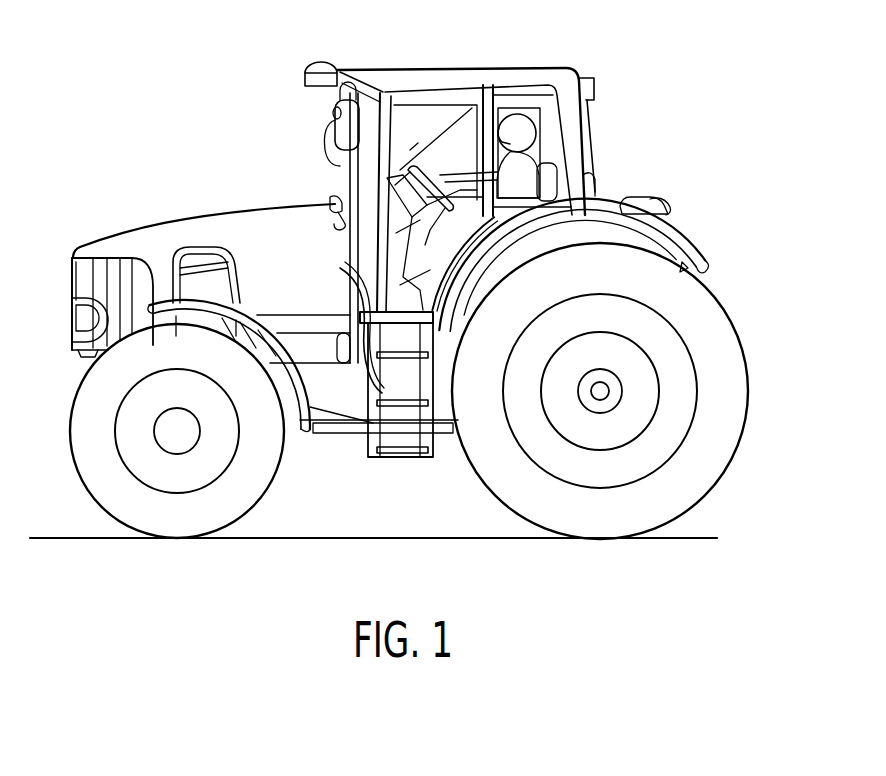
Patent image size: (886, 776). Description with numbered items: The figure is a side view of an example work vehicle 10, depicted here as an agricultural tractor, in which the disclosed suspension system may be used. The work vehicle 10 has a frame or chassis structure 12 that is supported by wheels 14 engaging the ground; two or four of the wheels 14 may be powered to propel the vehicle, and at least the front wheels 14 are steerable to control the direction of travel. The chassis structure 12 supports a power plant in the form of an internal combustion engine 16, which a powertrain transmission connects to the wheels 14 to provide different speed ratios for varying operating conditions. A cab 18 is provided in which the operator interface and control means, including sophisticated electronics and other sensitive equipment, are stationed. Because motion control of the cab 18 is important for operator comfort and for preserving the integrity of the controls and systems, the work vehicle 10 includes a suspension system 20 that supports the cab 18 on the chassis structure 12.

The work vehicle 10 is at (565, 54).
The chassis structure 12 is at (292, 420).
The wheels 14 is at (609, 392).
The internal combustion engine 16 is at (153, 245).
The cab 18 is at (424, 82).
The suspension system 20 is at (340, 268).